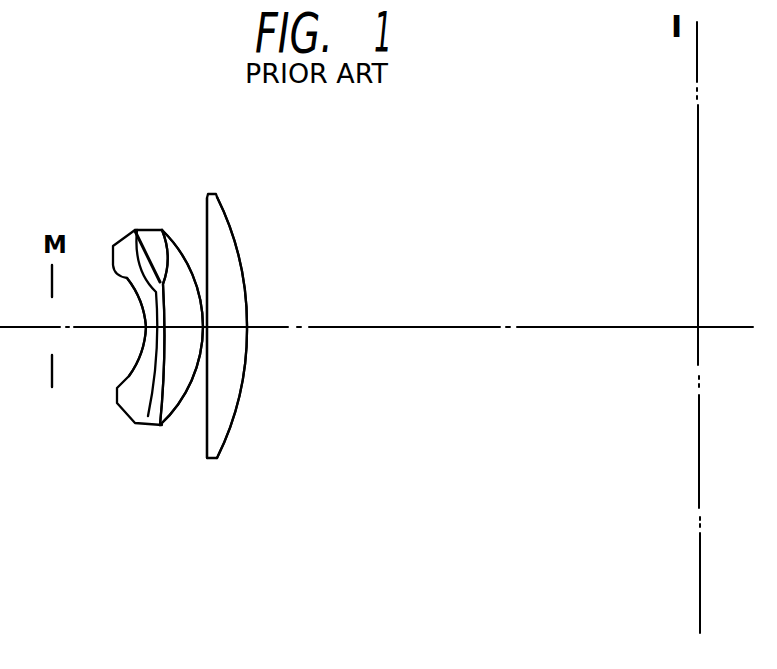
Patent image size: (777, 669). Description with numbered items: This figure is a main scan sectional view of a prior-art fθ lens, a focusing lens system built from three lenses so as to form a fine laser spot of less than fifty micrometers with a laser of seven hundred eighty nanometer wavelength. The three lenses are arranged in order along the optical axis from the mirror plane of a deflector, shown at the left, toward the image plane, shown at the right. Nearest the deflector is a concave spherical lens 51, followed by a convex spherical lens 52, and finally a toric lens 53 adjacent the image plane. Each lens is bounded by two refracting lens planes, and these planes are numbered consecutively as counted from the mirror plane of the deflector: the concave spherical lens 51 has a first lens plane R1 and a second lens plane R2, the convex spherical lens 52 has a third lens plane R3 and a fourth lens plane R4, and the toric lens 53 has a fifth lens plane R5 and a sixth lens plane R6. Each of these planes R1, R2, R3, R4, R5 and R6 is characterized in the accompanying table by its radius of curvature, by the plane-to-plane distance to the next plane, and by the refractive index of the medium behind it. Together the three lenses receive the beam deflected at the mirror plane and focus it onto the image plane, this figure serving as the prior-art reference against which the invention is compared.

The concave spherical lens 51 is at (132, 404).
The convex spherical lens 52 is at (160, 407).
The toric lens 53 is at (218, 437).
The first lens plane R1 is at (125, 277).
The second lens plane R2 is at (137, 229).
The third lens plane R3 is at (163, 229).
The fourth lens plane R4 is at (173, 240).
The fifth lens plane R5 is at (206, 218).
The sixth lens plane R6 is at (222, 212).